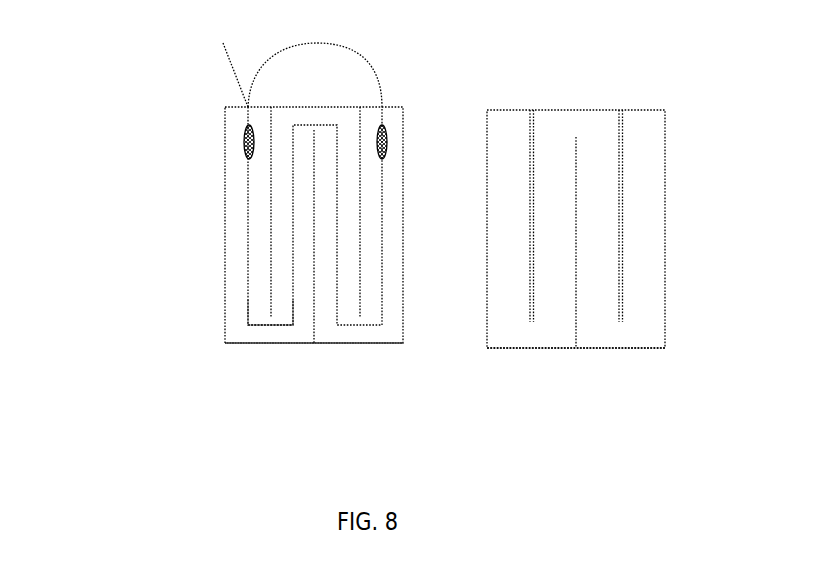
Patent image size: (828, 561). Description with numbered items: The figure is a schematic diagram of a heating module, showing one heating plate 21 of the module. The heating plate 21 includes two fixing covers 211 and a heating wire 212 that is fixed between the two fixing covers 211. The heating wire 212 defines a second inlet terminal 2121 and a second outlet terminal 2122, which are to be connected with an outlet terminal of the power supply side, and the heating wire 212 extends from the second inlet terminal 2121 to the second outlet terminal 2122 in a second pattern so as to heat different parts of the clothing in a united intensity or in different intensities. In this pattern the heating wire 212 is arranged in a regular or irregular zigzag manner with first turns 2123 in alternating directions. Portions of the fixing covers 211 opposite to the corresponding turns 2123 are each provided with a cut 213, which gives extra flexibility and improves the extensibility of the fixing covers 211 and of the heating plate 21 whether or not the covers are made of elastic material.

The heating plate 21 is at (212, 218).
The fixing cover 211 is at (510, 340).
The heating wire 212 is at (247, 275).
The second inlet terminal 2121 is at (245, 128).
The second outlet terminal 2122 is at (385, 138).
The first turn 2123 is at (263, 322).
The cut 213 is at (623, 113).